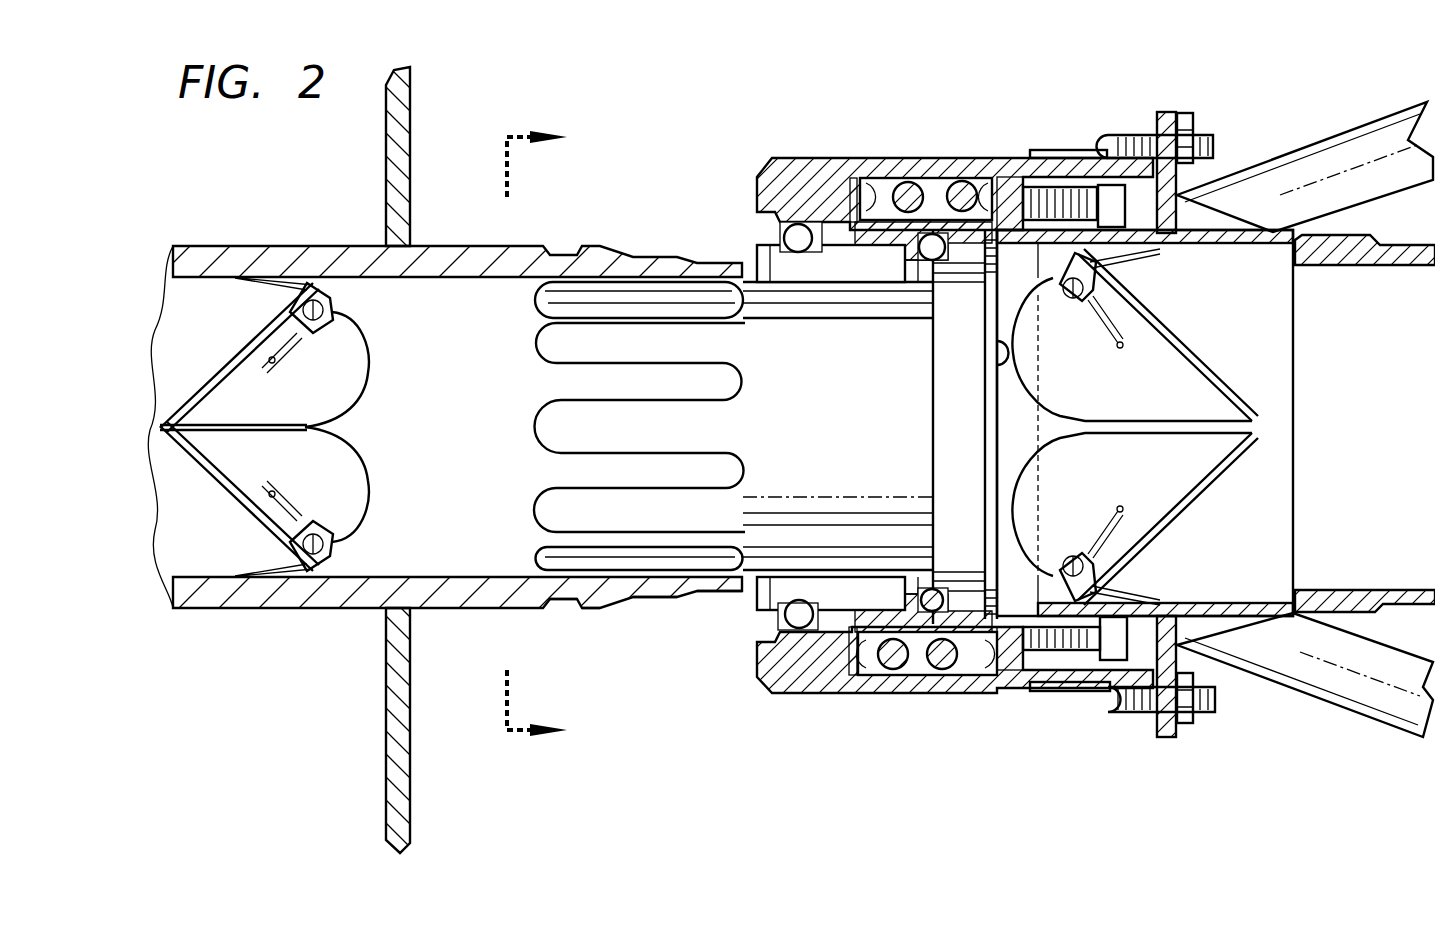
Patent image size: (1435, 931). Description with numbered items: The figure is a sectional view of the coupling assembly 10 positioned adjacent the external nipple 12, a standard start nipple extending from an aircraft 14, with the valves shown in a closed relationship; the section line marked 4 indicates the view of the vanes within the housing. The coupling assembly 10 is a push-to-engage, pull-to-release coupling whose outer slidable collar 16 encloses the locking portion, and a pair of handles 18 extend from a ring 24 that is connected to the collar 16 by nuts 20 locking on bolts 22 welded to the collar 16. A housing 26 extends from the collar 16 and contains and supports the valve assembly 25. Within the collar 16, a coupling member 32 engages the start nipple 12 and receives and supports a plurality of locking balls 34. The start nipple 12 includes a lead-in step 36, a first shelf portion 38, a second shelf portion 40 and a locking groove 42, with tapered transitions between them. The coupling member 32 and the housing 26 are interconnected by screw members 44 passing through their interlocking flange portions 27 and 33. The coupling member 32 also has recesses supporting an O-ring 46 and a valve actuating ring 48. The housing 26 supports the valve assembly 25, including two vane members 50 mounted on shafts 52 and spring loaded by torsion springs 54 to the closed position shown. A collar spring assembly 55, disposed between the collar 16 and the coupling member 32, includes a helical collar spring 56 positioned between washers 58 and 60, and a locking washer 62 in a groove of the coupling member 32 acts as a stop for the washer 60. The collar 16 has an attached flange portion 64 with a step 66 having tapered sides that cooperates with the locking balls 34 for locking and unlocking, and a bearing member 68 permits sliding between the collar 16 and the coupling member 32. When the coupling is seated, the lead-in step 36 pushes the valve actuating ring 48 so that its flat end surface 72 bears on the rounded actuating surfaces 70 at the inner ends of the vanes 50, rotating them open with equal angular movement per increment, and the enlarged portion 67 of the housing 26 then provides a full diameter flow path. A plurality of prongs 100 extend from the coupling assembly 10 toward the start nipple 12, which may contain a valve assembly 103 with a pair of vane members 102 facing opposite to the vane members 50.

The coupling assembly 10 is at (993, 88).
The external nipple 12 is at (347, 214).
The aircraft 14 is at (410, 787).
The outer slidable collar 16 is at (1003, 158).
The handles 18 is at (1385, 112).
The nuts 20 is at (1186, 118).
The bolts 22 is at (1120, 135).
The ring 24 is at (1170, 112).
The valve assembly 25 is at (1193, 310).
The housing 26 is at (1352, 236).
The flange portion 27 is at (992, 697).
The coupling member 32 is at (766, 236).
The flange portion 33 is at (1072, 660).
The locking balls 34 is at (790, 248).
The lead-in step 36 is at (722, 608).
The first shelf portion 38 is at (667, 612).
The second shelf portion 40 is at (600, 614).
The locking groove 42 is at (560, 608).
The screw members 44 is at (1113, 207).
The O-ring 46 is at (925, 600).
The valve actuating ring 48 is at (960, 376).
The vane members 50 is at (1207, 368).
The shafts 52 is at (1113, 289).
The torsion springs 54 is at (1107, 502).
The collar spring assembly 55 is at (920, 667).
The helical collar spring 56 is at (907, 187).
The washer 58 is at (977, 185).
The washer 60 is at (847, 193).
The locking washer 62 is at (772, 160).
The flange portion 64 is at (773, 678).
The step 66 is at (807, 640).
The enlarged portion 67 is at (1233, 603).
The bearing member 68 is at (1147, 670).
The actuating surfaces 70 is at (1000, 452).
The flat end surface 72 is at (1007, 353).
The prongs 100 is at (543, 503).
The vane members 102 is at (350, 390).
The valve assembly 103 is at (315, 427).
The section line 4 is at (548, 439).